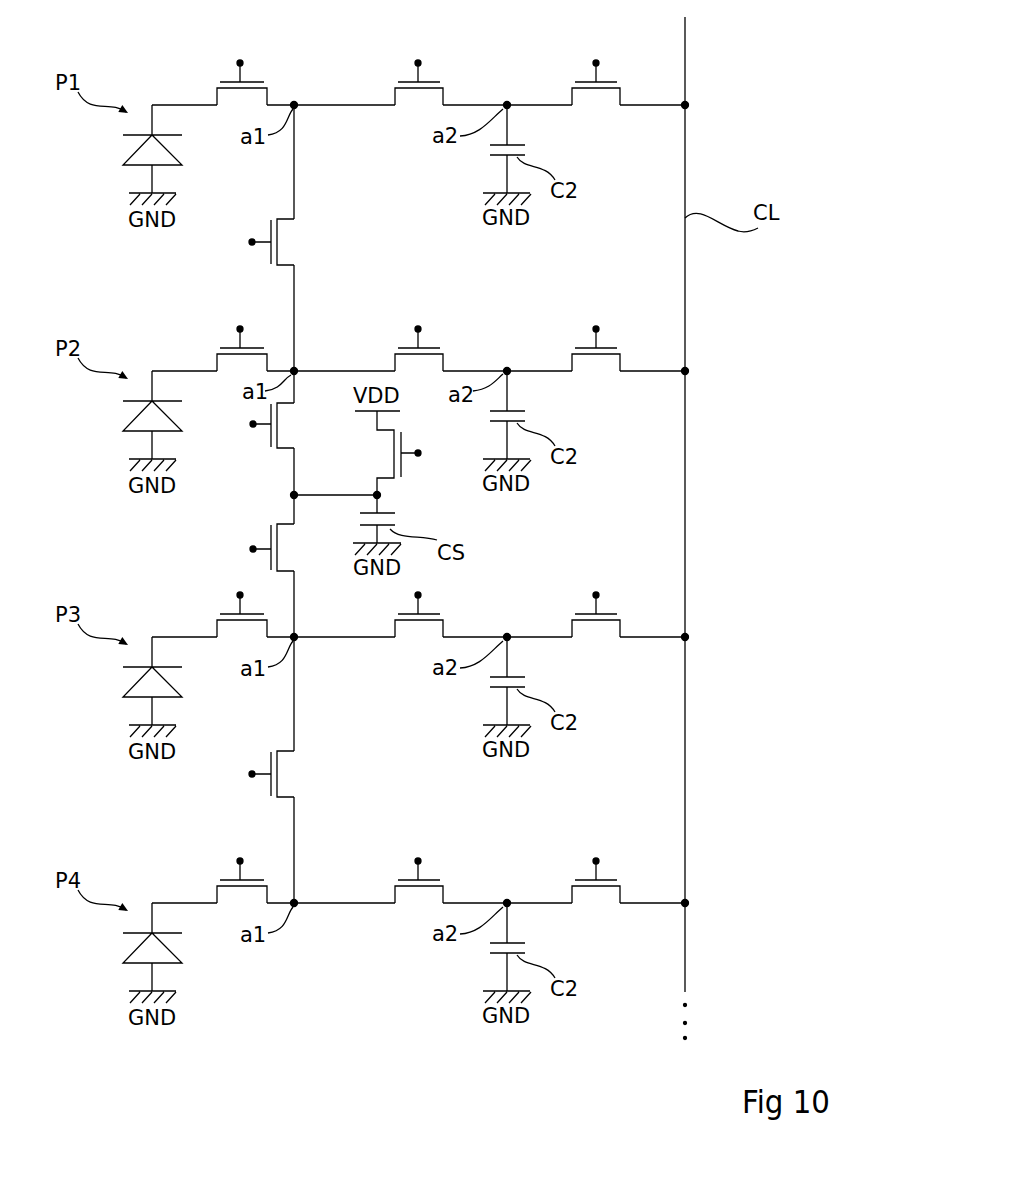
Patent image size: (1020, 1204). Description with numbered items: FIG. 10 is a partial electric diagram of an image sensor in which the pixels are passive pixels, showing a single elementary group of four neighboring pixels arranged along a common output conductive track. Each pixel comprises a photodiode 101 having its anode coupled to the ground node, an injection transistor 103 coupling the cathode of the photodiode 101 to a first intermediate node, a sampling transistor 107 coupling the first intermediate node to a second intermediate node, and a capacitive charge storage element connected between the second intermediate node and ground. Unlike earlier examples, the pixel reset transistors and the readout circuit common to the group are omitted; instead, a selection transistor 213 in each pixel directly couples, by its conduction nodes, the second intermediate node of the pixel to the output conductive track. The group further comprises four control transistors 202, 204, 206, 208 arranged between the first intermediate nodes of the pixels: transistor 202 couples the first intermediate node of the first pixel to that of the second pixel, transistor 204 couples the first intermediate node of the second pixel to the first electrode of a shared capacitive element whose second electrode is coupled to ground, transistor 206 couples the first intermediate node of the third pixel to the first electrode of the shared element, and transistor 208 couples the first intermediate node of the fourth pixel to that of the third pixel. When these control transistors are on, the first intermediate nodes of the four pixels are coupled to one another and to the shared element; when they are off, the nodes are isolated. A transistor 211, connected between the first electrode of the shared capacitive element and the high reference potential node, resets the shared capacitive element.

The photodiode 101 is at (128, 156).
The injection transistor 103 is at (230, 79).
The sampling transistor 107 is at (400, 80).
The control transistor 202 is at (268, 258).
The control transistor 204 is at (270, 437).
The control transistor 206 is at (270, 537).
The control transistor 208 is at (270, 788).
The reset transistor 211 is at (402, 467).
The selection transistor 213 is at (608, 80).